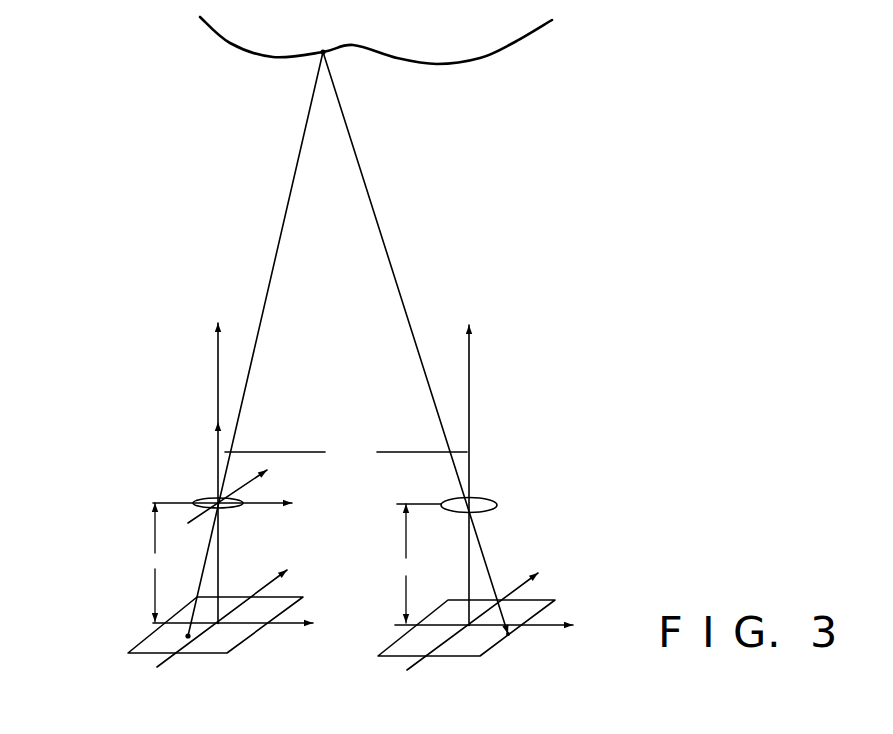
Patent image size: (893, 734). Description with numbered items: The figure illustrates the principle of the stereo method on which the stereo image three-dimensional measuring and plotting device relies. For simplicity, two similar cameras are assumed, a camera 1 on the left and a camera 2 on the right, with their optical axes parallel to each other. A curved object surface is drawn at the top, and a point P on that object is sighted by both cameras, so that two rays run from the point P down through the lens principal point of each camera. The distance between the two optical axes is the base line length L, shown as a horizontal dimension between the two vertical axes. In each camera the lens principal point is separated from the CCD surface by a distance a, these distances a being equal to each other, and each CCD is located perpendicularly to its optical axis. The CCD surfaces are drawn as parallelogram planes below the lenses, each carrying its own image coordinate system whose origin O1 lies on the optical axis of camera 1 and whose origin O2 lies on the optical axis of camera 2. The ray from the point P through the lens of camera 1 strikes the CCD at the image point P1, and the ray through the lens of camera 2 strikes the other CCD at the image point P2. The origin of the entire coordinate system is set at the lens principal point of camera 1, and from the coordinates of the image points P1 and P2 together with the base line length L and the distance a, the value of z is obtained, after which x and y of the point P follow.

The camera 1 is at (196, 495).
The camera 2 is at (498, 496).
The point on object P is at (422, 40).
The base line length L is at (346, 427).
The distance from lens principal point to CCD surface a is at (155, 562).
The origin of camera 1 image coordinates O1 is at (227, 633).
The origin of camera 2 image coordinates O2 is at (477, 636).
The image point P1 is at (154, 637).
The image point P2 is at (541, 642).